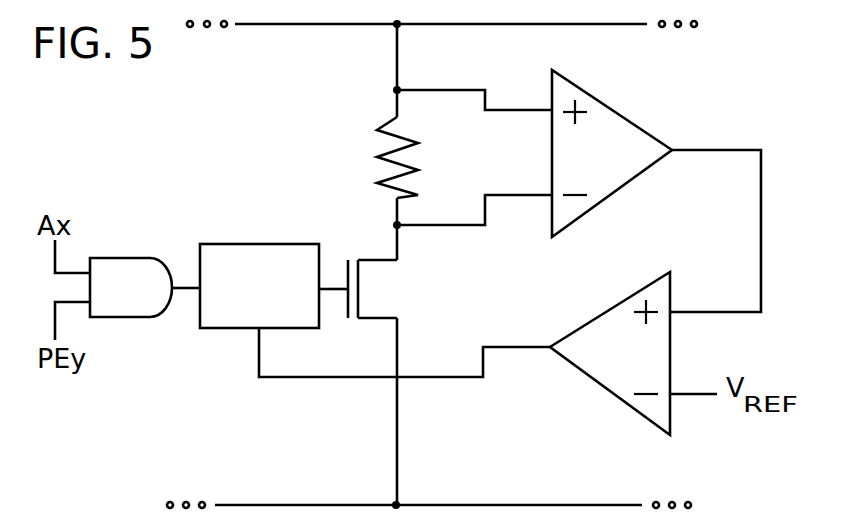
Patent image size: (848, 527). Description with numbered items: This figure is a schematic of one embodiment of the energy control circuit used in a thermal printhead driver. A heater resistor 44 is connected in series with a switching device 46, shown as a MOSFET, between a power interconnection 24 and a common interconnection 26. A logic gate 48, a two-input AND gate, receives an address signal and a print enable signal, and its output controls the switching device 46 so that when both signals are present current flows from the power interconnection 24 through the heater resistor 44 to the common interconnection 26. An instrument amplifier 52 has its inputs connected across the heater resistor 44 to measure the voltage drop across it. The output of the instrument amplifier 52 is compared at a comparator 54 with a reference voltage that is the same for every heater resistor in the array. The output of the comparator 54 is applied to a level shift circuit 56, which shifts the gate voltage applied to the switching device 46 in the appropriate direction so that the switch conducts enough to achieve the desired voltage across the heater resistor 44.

The power interconnection 24 is at (285, 25).
The common interconnection 26 is at (287, 503).
The heater resistor 44 is at (397, 112).
The switching device 46 is at (360, 290).
The logic gate 48 is at (120, 258).
The instrument amplifier 52 is at (612, 195).
The comparator 54 is at (612, 307).
The level shift circuit 56 is at (235, 244).